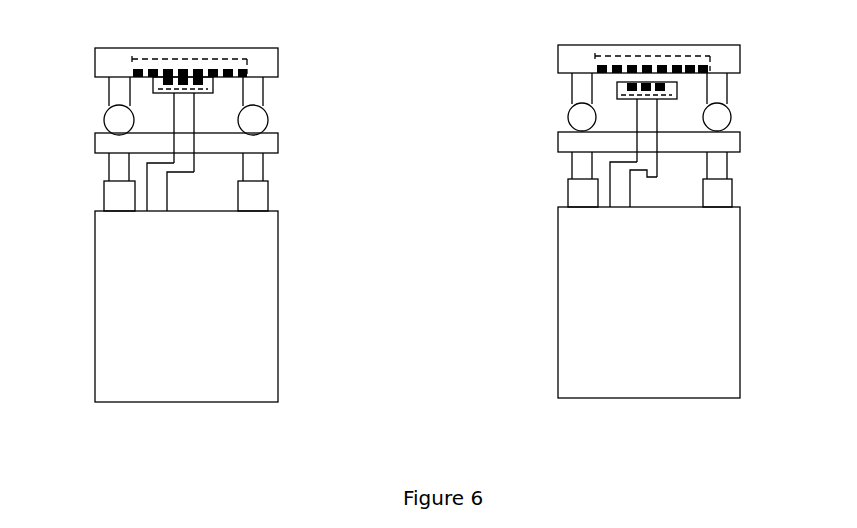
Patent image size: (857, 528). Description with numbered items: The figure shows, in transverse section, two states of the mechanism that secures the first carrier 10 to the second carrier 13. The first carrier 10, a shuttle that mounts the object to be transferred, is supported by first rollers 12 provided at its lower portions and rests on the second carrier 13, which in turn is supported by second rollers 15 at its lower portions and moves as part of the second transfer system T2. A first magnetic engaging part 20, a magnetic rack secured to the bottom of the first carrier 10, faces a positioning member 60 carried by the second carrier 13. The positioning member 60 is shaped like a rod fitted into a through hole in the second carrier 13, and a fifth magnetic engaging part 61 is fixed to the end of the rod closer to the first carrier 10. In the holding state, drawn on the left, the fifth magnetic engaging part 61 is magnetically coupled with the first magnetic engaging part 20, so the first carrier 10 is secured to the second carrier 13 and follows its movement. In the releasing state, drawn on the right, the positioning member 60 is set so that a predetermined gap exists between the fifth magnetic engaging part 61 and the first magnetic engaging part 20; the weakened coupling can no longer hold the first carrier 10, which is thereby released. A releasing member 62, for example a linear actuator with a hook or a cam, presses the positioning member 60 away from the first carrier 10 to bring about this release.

The first carrier 10 is at (103, 53).
The first rollers 12 is at (117, 121).
The second carrier 13 is at (260, 145).
The second rollers 15 is at (127, 192).
The first magnetic engaging part 20 is at (227, 72).
The positioning member 60 is at (180, 123).
The fifth magnetic engaging part 61 is at (207, 87).
The releasing member 62 is at (153, 197).
The second transfer system T2 is at (255, 348).